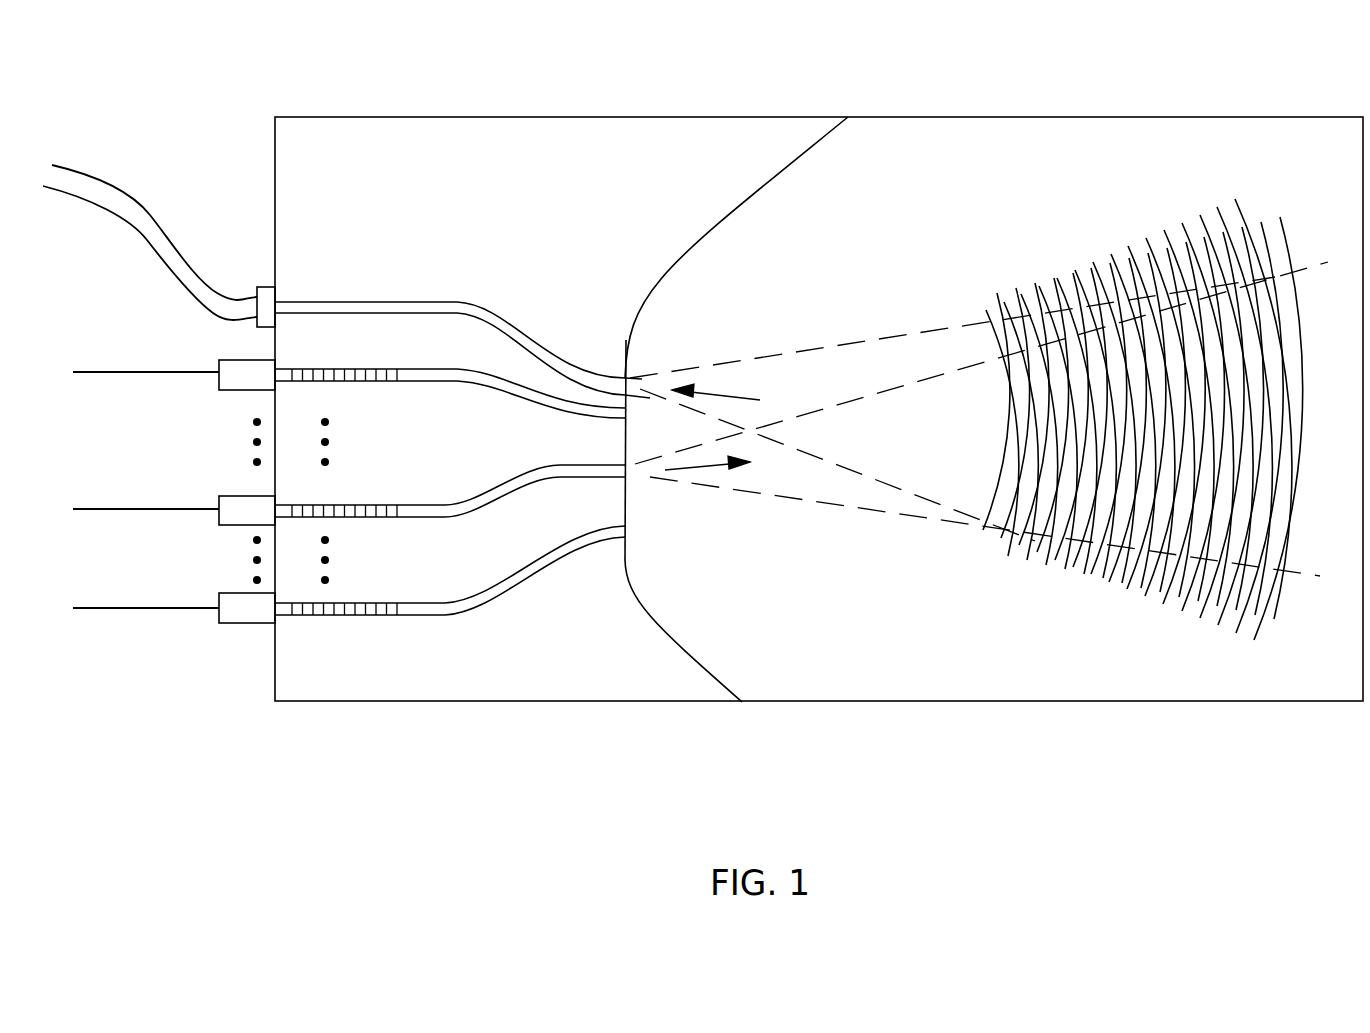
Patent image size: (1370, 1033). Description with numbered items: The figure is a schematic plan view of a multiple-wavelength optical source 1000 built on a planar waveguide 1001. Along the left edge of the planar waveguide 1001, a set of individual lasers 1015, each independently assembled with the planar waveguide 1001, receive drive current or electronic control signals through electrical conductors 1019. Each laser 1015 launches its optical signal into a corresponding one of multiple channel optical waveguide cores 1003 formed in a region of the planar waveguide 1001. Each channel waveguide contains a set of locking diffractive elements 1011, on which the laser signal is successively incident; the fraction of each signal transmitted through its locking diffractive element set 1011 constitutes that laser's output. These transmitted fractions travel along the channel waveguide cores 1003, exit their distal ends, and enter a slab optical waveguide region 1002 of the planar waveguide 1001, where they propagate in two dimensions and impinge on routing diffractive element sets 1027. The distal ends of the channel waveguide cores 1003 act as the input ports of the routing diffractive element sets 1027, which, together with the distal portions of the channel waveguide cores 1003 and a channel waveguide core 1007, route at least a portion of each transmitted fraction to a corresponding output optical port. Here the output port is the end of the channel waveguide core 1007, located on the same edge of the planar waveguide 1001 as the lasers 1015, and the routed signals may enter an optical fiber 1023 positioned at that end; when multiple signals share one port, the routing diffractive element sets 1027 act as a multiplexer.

The multiple-wavelength optical source 1000 is at (220, 786).
The planar waveguide 1001 is at (653, 685).
The slab optical waveguide region 1002 is at (896, 627).
The channel optical waveguide cores 1003 is at (545, 398).
The channel waveguide core 1007 is at (400, 305).
The locking diffractive elements 1011 is at (368, 512).
The lasers 1015 is at (240, 512).
The electrical conductors 1019 is at (135, 372).
The optical fiber 1023 is at (126, 208).
The routing diffractive element sets 1027 is at (1100, 215).